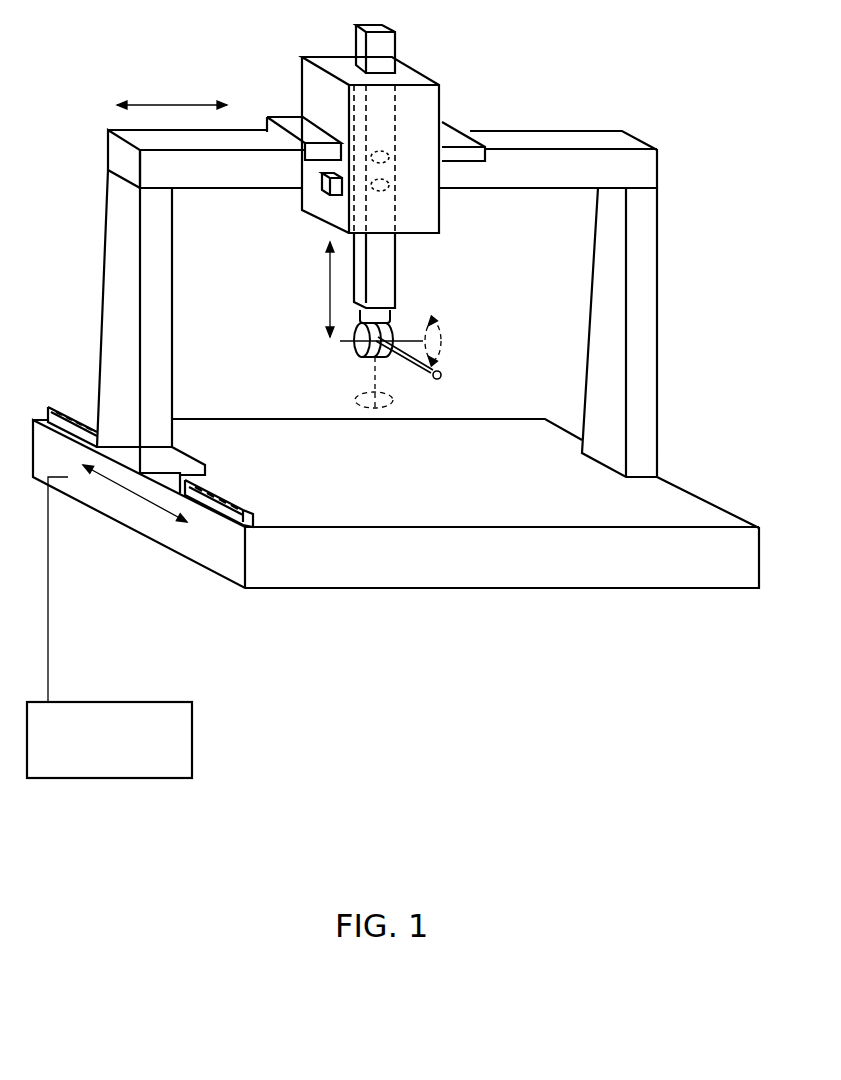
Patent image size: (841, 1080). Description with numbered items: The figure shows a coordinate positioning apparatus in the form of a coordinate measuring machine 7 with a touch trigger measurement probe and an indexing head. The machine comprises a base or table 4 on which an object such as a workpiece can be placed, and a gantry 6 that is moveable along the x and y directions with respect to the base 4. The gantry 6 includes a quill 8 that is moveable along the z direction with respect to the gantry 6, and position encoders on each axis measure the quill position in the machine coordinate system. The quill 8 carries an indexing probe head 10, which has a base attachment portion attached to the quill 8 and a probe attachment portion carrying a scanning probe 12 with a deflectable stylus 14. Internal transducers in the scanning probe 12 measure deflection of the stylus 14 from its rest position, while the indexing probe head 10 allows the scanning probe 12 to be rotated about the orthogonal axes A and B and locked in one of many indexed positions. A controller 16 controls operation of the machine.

The base or table 4 is at (368, 588).
The gantry 6 is at (440, 90).
The coordinate measuring machine 7 is at (572, 89).
The quill 8 is at (382, 268).
The indexing probe head 10 is at (345, 354).
The scanning probe 12 is at (408, 375).
The deflectable stylus 14 is at (442, 373).
The controller 16 is at (125, 751).